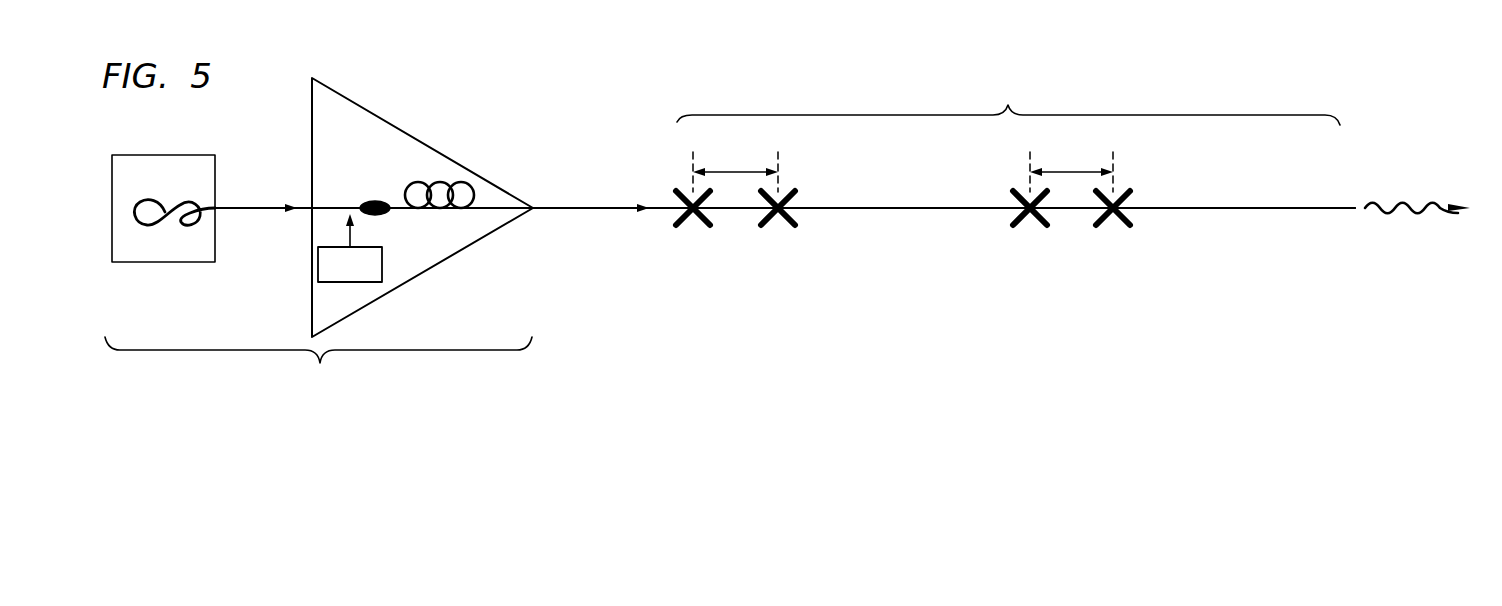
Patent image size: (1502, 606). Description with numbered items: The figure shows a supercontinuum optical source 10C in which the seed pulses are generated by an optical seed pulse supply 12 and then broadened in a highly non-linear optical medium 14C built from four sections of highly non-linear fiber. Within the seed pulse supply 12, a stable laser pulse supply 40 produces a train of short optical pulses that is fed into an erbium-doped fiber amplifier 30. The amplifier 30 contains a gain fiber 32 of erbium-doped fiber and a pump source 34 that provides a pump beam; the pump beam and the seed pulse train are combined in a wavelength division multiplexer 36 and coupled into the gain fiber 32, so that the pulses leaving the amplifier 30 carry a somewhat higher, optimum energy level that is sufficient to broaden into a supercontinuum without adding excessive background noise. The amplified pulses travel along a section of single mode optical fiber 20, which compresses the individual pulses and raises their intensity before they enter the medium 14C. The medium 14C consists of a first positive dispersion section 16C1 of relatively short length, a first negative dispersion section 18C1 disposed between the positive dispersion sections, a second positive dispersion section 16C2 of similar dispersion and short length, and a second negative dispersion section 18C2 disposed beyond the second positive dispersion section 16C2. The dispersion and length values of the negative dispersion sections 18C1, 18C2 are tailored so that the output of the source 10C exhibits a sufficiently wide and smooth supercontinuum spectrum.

The supercontinuum optical source 10C is at (1378, 104).
The optical seed pulse supply 12 is at (330, 393).
The highly non-linear optical medium 14C is at (1026, 97).
The first P-HNLF section 16C1 is at (740, 214).
The second P-HNLF section 16C2 is at (1077, 214).
The first N-HNLF section 18C1 is at (900, 205).
The second N-HNLF section 18C2 is at (1239, 206).
The single mode optical fiber 20 is at (588, 205).
The erbium-doped fiber amplifier 30 is at (388, 118).
The gain fiber 32 is at (434, 180).
The pump source 34 is at (382, 262).
The wavelength division multiplexer 36 is at (370, 200).
The stable laser pulse supply 40 is at (160, 155).